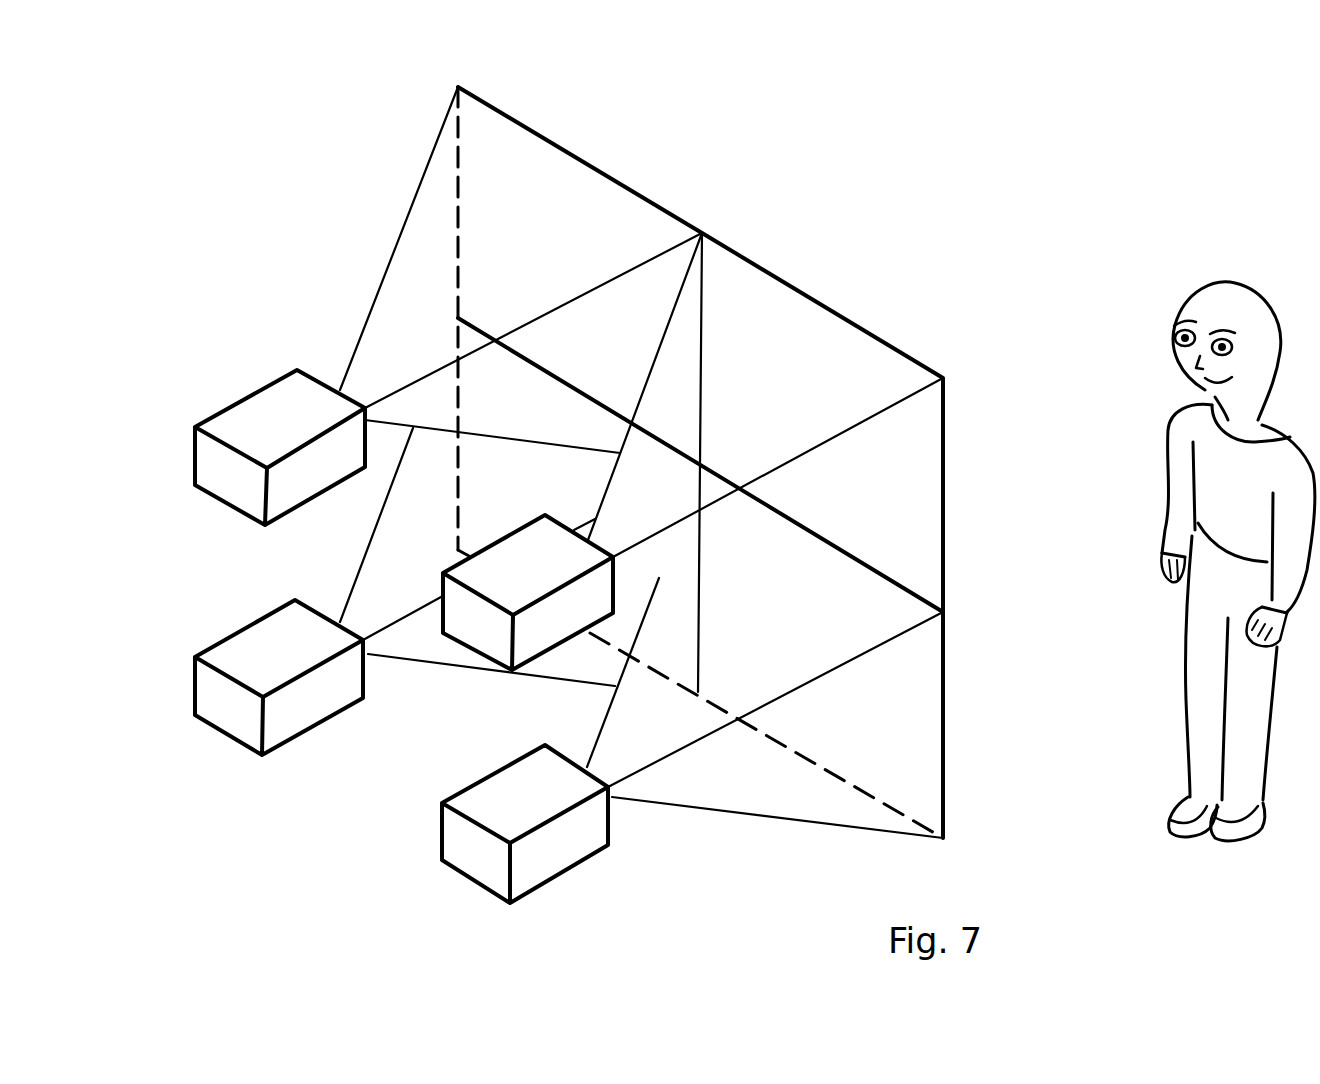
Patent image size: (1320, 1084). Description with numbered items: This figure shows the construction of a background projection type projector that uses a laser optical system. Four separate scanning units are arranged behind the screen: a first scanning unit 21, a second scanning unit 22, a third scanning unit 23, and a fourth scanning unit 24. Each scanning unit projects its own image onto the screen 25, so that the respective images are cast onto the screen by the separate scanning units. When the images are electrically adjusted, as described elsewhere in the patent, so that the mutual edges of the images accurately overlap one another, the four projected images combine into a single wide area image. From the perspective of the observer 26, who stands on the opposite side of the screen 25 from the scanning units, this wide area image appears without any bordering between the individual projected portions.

The first scanning unit 21 is at (233, 482).
The second scanning unit 22 is at (478, 636).
The third scanning unit 23 is at (237, 722).
The fourth scanning unit 24 is at (462, 847).
The screen 25 is at (648, 197).
The observer 26 is at (1143, 605).